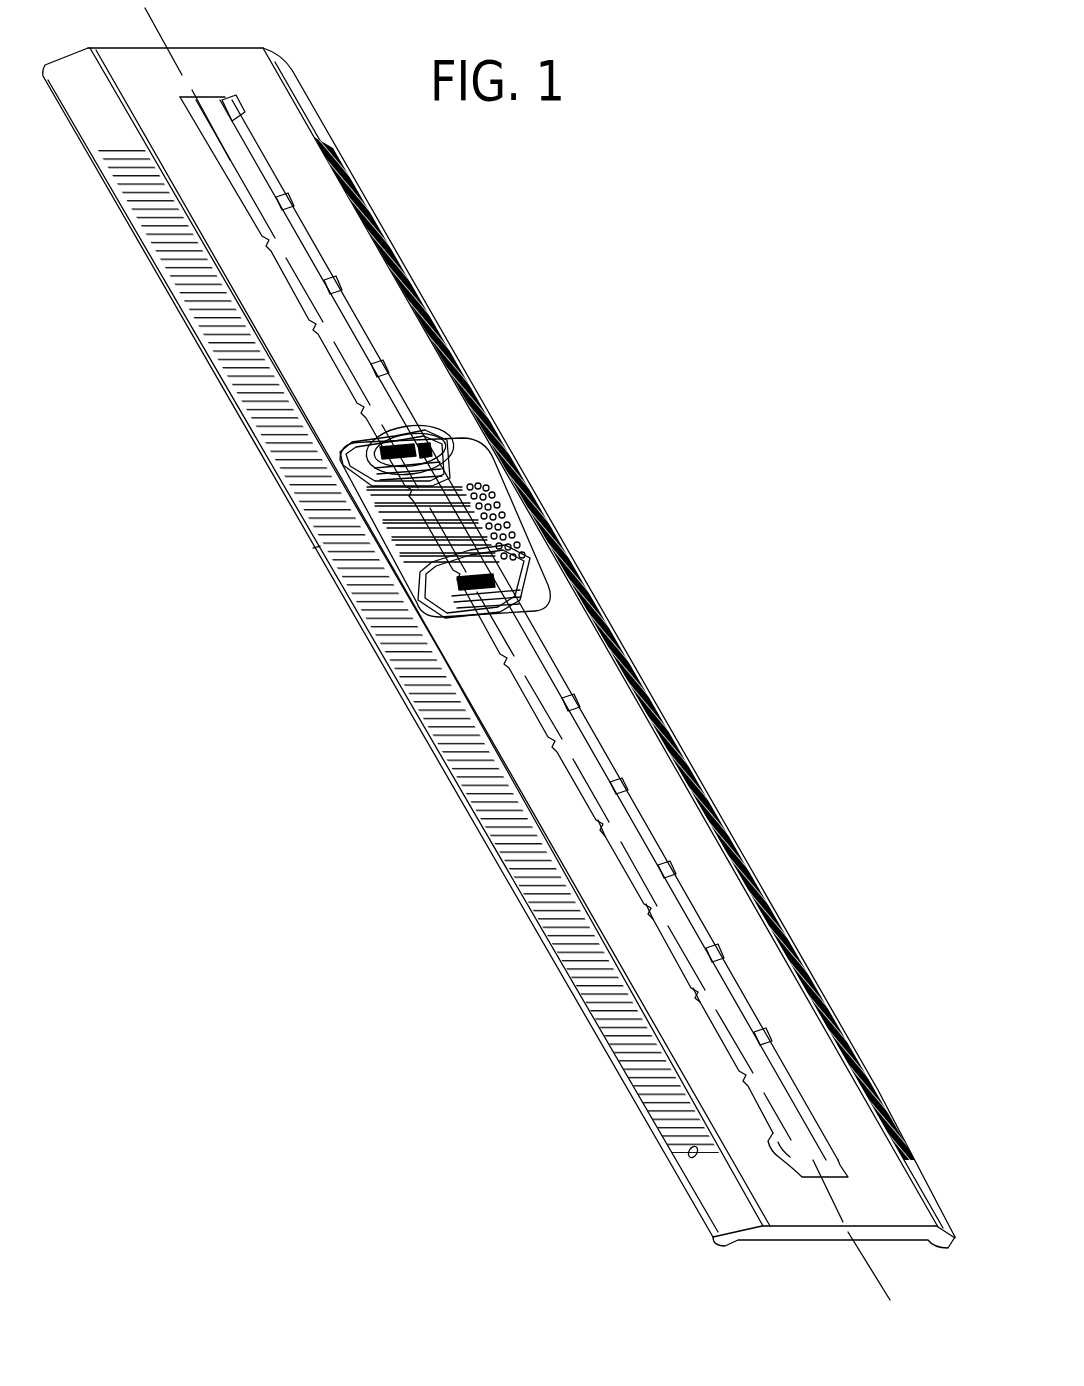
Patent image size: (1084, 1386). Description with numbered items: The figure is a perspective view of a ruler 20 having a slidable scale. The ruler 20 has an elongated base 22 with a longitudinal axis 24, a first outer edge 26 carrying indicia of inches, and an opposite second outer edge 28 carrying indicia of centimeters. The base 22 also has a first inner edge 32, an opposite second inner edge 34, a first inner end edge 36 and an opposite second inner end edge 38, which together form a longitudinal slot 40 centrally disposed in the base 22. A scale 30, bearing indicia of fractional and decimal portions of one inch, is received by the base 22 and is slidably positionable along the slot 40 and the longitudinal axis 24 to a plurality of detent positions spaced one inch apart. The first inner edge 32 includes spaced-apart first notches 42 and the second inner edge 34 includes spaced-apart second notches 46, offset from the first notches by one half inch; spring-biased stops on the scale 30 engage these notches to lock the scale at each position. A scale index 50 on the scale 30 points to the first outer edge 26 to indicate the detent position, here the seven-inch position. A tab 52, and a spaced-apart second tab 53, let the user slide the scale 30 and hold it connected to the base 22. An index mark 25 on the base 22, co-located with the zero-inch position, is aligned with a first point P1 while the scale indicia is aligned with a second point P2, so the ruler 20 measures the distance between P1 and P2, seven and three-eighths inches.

The ruler 20 is at (503, 220).
The elongated base 22 is at (190, 48).
The longitudinal axis 24 is at (878, 1286).
The index mark 25 is at (688, 1155).
The first outer edge 26 is at (410, 508).
The second outer edge 28 is at (442, 353).
The scale 30 is at (493, 472).
The first inner edge 32 is at (283, 263).
The second inner edge 34 is at (345, 297).
The first inner end edge 36 is at (195, 97).
The second inner end edge 38 is at (823, 1180).
The longitudinal slot 40 is at (563, 749).
The first notches 42 is at (696, 995).
The second notches 46 is at (724, 957).
The scale index 50 is at (363, 585).
The tab 52 is at (531, 573).
The second tab 53 is at (427, 428).
The first point P1 is at (668, 1160).
The second point P2 is at (313, 548).